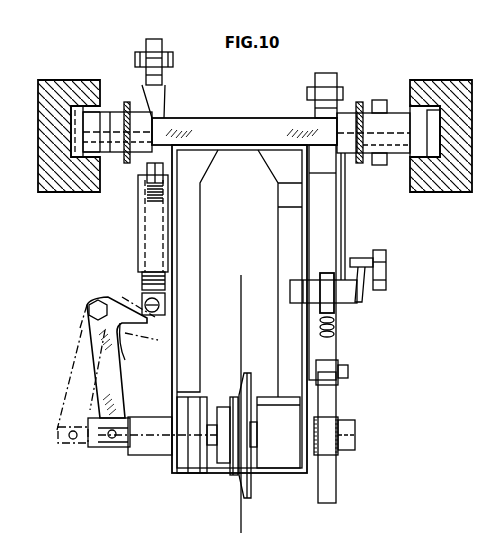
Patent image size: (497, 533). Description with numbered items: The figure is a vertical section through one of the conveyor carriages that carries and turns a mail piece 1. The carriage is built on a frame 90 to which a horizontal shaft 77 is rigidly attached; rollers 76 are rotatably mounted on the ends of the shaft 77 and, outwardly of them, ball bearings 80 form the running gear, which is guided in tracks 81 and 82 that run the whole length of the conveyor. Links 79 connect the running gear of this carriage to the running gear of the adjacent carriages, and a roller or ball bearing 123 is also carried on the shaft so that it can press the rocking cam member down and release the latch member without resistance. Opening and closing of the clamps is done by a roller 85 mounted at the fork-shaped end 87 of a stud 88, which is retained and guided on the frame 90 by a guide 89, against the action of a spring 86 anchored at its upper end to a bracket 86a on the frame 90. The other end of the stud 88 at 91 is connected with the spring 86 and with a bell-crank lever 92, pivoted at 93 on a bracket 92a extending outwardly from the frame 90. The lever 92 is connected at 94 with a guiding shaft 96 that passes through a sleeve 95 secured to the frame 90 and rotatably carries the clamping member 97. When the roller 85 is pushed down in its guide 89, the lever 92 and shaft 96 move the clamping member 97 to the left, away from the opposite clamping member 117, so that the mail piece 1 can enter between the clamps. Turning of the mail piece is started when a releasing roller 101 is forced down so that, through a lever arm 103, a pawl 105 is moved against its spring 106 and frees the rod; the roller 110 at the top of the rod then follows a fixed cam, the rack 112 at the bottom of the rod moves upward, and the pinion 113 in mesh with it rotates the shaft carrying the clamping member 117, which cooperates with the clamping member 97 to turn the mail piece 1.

The mail piece 1 is at (241, 278).
The roller 76 is at (392, 112).
The shaft 77 is at (248, 122).
The link 79 is at (127, 102).
The ball bearing 80 is at (84, 108).
The track 81 is at (434, 188).
The track 82 is at (75, 184).
The roller 85 is at (152, 40).
The spring 86 is at (148, 276).
The bracket 86a is at (148, 178).
The fork-shaped end 87 is at (170, 63).
The stud 88 is at (163, 110).
The guide 89 is at (140, 226).
The carriage frame member 90 is at (285, 224).
The connection point of stud 91 is at (160, 306).
The bell-crank lever 92 is at (92, 346).
The bracket 92a is at (165, 330).
The pivot 93 is at (95, 300).
The connection point of lever 94 is at (112, 440).
The sleeve 95 is at (150, 456).
The guiding shaft 96 is at (190, 474).
The clamping member 97 is at (233, 477).
The releasing roller 101 is at (388, 268).
The lever arm 103 is at (365, 296).
The pawl 105 is at (335, 308).
The spring 106 is at (336, 331).
The roller 110 is at (325, 73).
The rack 112 is at (333, 470).
The pinion 113 is at (340, 421).
The clamping member 117 is at (252, 496).
The roller or ball bearing 123 is at (384, 166).